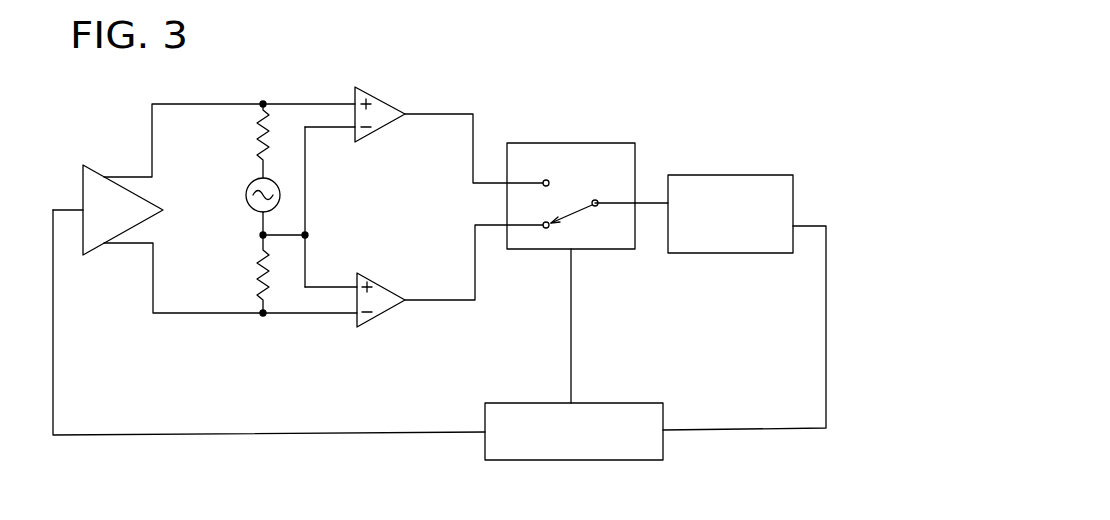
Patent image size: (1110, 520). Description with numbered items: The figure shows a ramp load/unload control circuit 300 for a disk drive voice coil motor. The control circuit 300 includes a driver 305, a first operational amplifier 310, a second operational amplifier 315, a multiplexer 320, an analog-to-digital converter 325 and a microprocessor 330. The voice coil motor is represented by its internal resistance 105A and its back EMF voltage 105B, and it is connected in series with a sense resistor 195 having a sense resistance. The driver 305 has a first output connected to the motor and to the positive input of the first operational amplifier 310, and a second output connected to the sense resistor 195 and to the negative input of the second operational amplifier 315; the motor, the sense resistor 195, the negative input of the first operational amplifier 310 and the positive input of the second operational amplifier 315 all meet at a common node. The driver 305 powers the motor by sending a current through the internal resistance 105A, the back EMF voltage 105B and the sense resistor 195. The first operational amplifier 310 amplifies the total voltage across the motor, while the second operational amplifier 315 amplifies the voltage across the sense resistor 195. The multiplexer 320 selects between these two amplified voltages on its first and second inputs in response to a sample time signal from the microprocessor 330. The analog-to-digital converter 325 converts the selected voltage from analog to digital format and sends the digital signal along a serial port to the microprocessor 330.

The ramp load/unload control circuit 300 is at (113, 101).
The driver 305 is at (96, 173).
The internal resistance (Rvcm) 105A is at (258, 142).
The back EMF voltage (Vbemf) 105B is at (246, 202).
The sense resistor 195 is at (258, 274).
The first operational amplifier 310 is at (392, 99).
The second operational amplifier 315 is at (392, 287).
The multiplexer 320 is at (575, 143).
The analog-to-digital converter (ADC) 325 is at (728, 175).
The microprocessor 330 is at (518, 402).